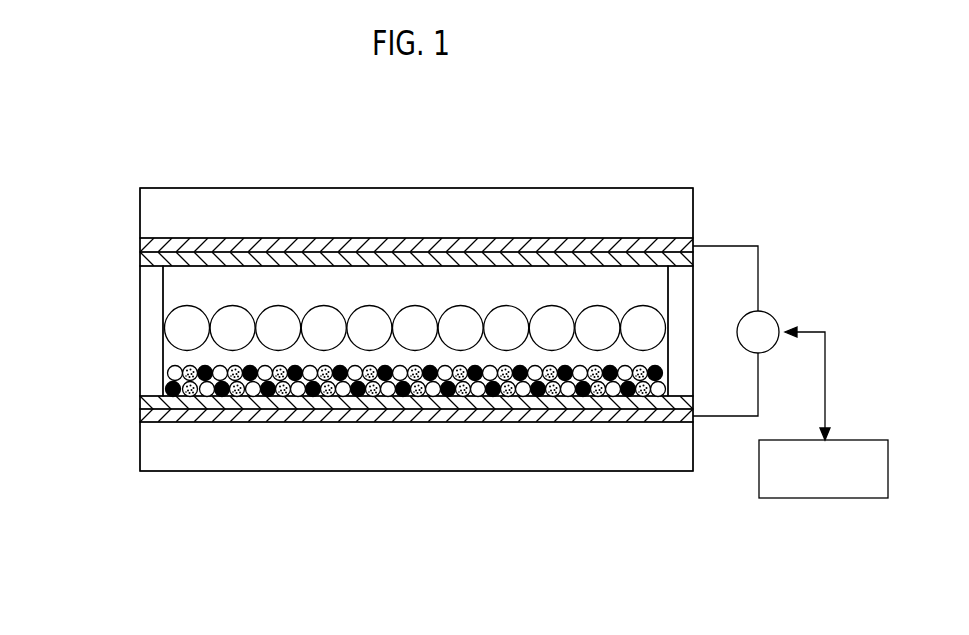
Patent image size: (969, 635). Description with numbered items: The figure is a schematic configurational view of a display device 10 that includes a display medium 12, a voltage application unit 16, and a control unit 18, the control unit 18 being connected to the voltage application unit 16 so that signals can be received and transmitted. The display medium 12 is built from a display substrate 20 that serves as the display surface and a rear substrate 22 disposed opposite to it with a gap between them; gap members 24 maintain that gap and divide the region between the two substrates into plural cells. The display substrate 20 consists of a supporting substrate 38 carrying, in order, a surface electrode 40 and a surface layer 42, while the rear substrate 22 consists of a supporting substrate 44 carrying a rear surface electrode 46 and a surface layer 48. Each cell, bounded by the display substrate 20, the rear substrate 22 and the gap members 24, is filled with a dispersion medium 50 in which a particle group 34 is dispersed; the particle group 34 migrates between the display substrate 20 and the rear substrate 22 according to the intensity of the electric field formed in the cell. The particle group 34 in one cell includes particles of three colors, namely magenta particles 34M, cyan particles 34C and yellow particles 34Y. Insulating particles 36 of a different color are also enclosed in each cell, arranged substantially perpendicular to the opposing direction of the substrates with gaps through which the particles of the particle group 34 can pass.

The display device 10 is at (708, 130).
The display medium 12 is at (610, 187).
The voltage application unit 16 is at (775, 312).
The control unit 18 is at (838, 438).
The display substrate 20 is at (62, 170).
The rear substrate 22 is at (62, 375).
The gap members 24 is at (148, 317).
The particle group 34 is at (350, 527).
The magenta particles 34M is at (171, 390).
The cyan particles 34C is at (192, 390).
The yellow particles 34Y is at (200, 390).
The insulating particles 36 is at (593, 304).
The supporting substrate 38 is at (150, 207).
The surface electrode 40 is at (143, 250).
The surface layer 42 is at (143, 258).
The supporting substrate 44 is at (145, 447).
The rear surface electrode 46 is at (140, 418).
The surface layer 48 is at (143, 402).
The dispersion medium 50 is at (337, 280).